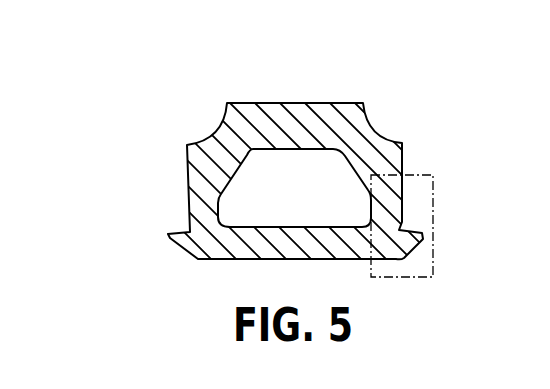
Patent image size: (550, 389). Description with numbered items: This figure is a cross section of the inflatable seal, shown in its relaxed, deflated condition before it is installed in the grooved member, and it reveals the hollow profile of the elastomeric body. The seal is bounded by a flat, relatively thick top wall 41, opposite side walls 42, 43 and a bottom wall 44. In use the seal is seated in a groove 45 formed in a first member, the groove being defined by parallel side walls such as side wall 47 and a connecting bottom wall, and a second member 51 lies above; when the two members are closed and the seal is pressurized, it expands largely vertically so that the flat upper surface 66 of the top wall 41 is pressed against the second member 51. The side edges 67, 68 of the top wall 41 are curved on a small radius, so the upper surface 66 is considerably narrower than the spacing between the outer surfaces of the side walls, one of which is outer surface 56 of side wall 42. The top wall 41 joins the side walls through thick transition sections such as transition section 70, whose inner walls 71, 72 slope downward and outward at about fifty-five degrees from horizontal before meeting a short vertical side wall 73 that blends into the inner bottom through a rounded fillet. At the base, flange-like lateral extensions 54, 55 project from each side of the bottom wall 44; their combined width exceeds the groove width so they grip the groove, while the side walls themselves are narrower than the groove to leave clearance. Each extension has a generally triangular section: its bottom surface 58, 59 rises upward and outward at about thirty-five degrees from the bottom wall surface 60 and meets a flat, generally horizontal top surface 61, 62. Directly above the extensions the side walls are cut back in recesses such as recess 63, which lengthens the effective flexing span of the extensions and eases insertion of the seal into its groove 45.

The top wall 41 is at (288, 128).
The side wall 42 is at (402, 200).
The side wall 43 is at (186, 190).
The bottom wall 44 is at (285, 260).
The groove 45 is at (310, 226).
The side wall of groove 47 is at (224, 201).
The second member 51 is at (185, 162).
The lateral extension 54 is at (402, 251).
The lateral extension 55 is at (180, 240).
The outer surface of side wall 56 is at (410, 163).
The bottom surface of lateral extension 58 is at (412, 277).
The bottom surface of lateral extension 59 is at (172, 245).
The bottom wall surface 60 is at (245, 259).
The top surface of lateral extension 61 is at (407, 230).
The top surface of lateral extension 62 is at (182, 226).
The recess 63 is at (388, 137).
The upper surface 66 is at (226, 102).
The side edge of top wall 67 is at (372, 121).
The side edge of top wall 68 is at (208, 140).
The transition section 70 is at (217, 152).
The inner wall 71 is at (346, 165).
The inner wall 72 is at (237, 172).
The vertical side wall 73 is at (367, 202).